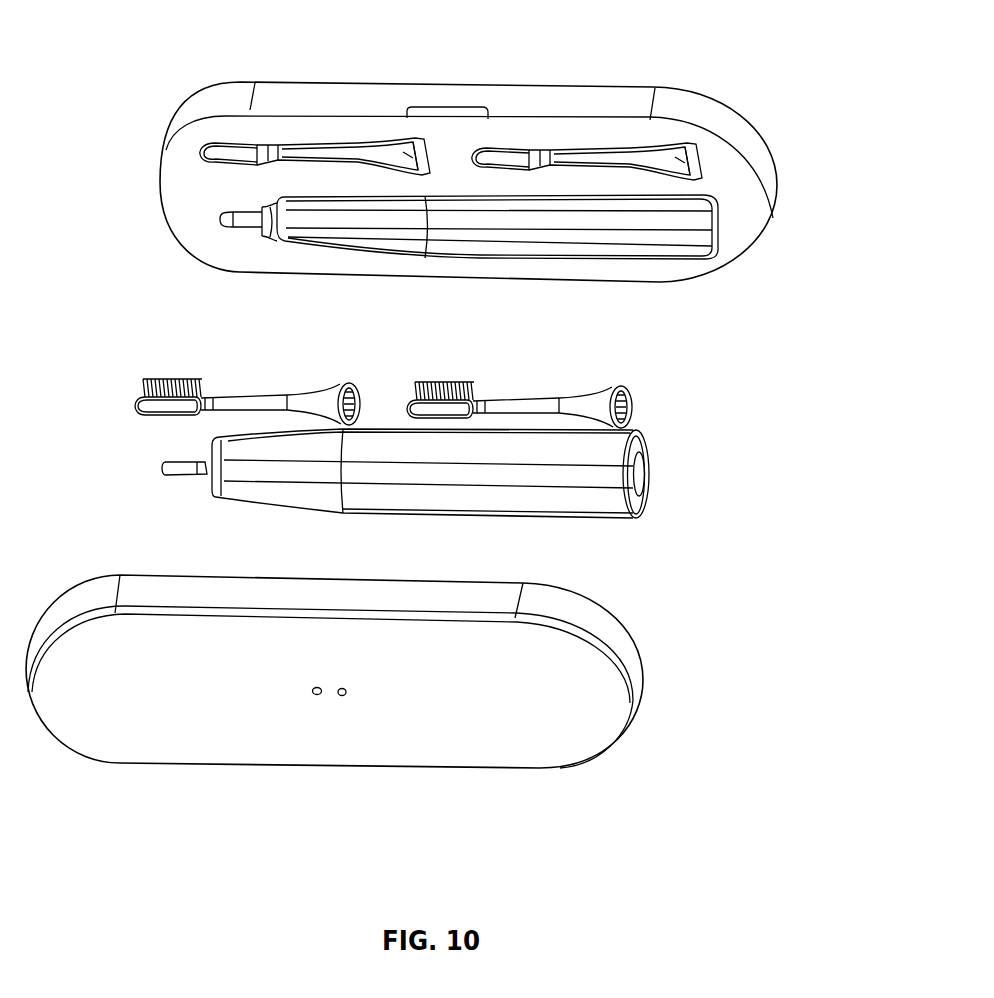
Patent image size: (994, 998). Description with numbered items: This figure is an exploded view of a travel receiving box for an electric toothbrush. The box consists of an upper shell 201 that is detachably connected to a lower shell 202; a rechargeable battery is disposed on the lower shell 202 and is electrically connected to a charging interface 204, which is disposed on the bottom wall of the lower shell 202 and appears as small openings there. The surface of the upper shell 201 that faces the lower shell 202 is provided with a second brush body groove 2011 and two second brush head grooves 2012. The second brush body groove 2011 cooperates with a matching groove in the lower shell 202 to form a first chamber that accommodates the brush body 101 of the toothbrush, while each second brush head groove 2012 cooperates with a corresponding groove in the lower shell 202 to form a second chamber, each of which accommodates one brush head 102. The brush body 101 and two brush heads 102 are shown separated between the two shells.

The upper shell 201 is at (547, 97).
The second brush head groove 2012 is at (247, 152).
The second brush body groove 2011 is at (653, 217).
The brush head 102 is at (232, 402).
The brush body 101 is at (610, 478).
The lower shell 202 is at (583, 680).
The charging interface 204 is at (312, 697).